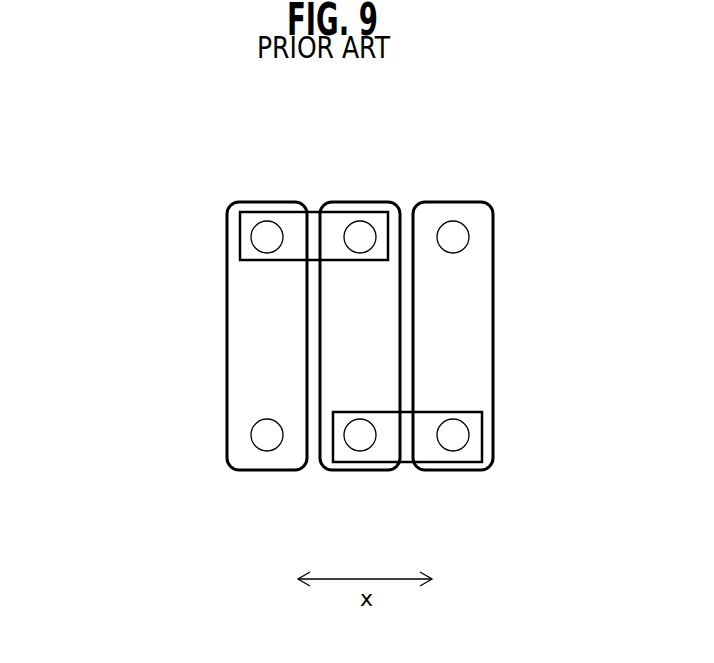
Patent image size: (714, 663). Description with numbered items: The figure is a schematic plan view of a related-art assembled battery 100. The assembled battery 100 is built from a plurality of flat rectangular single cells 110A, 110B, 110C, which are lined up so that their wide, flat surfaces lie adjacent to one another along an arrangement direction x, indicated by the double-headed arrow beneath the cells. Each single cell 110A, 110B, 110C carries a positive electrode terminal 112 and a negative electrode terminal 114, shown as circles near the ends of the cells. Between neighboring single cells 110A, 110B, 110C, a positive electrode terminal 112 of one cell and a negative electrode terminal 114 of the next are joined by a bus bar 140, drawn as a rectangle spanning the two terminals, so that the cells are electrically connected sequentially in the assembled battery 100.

The assembled battery 100 is at (88, 132).
The single cell 110A is at (273, 197).
The single cell 110B is at (366, 197).
The single cell 110C is at (461, 197).
The positive electrode terminal 112 is at (347, 221).
The negative electrode terminal 114 is at (255, 221).
The bus bar 140 is at (247, 252).